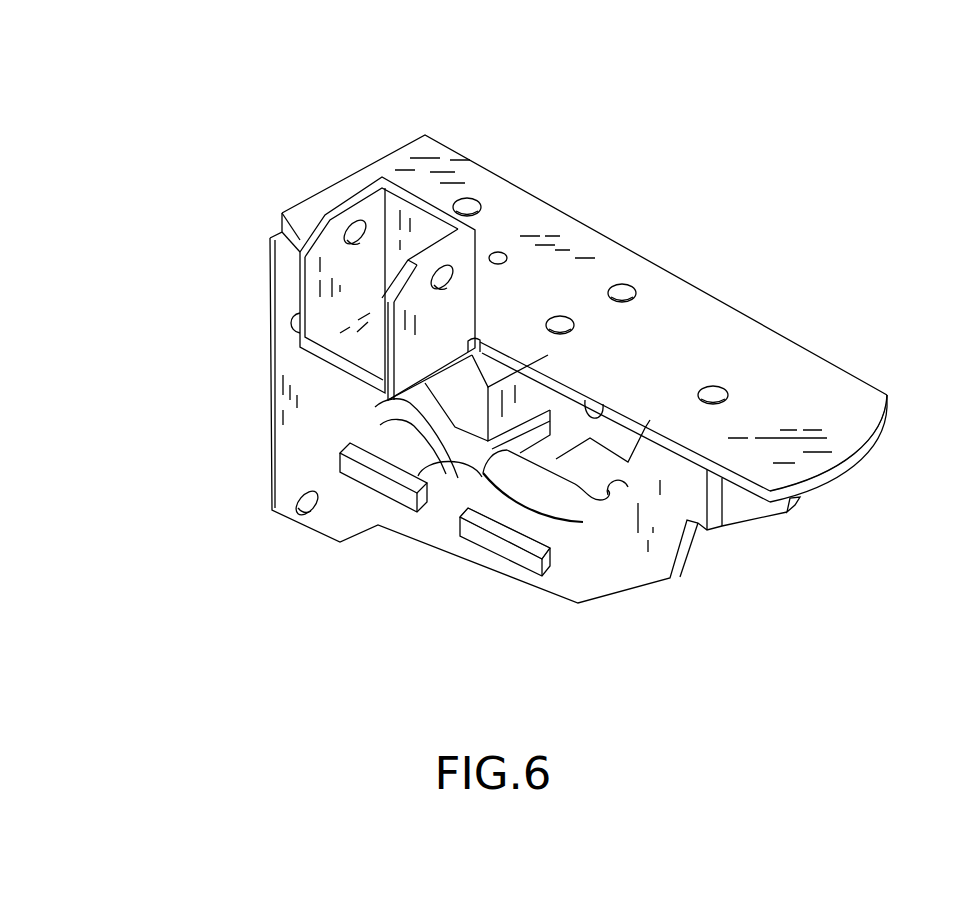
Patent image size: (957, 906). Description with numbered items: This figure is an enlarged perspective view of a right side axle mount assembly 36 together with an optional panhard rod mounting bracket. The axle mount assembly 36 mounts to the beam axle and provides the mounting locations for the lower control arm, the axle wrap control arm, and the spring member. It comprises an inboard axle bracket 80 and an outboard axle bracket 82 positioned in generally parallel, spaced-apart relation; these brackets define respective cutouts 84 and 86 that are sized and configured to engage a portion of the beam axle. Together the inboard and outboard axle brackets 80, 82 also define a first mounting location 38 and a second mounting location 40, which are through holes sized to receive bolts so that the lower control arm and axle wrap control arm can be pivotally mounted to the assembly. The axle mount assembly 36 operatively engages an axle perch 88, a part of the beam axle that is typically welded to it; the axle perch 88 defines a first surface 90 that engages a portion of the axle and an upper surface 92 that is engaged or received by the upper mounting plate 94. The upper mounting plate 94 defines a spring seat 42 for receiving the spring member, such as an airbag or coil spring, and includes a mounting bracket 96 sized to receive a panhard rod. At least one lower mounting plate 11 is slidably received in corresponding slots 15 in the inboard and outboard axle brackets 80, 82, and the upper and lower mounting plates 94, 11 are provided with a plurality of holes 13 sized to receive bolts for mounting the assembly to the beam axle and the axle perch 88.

The axle mount assembly 36 is at (167, 90).
The mounting bracket 96 is at (352, 193).
The holes 13 is at (480, 207).
The upper mounting plate 94 is at (800, 347).
The spring seat 42 is at (832, 405).
The first mounting location 38 is at (292, 318).
The upper surface 92 is at (488, 363).
The cutout 86 is at (600, 418).
The axle perch 88 is at (400, 404).
The first surface 90 is at (465, 387).
The second mounting location 40 is at (294, 485).
The lower mounting plate 11 is at (367, 482).
The cutout 84 is at (462, 520).
The slots 15 is at (527, 537).
The inboard axle bracket 80 is at (590, 580).
The outboard axle bracket 82 is at (757, 520).